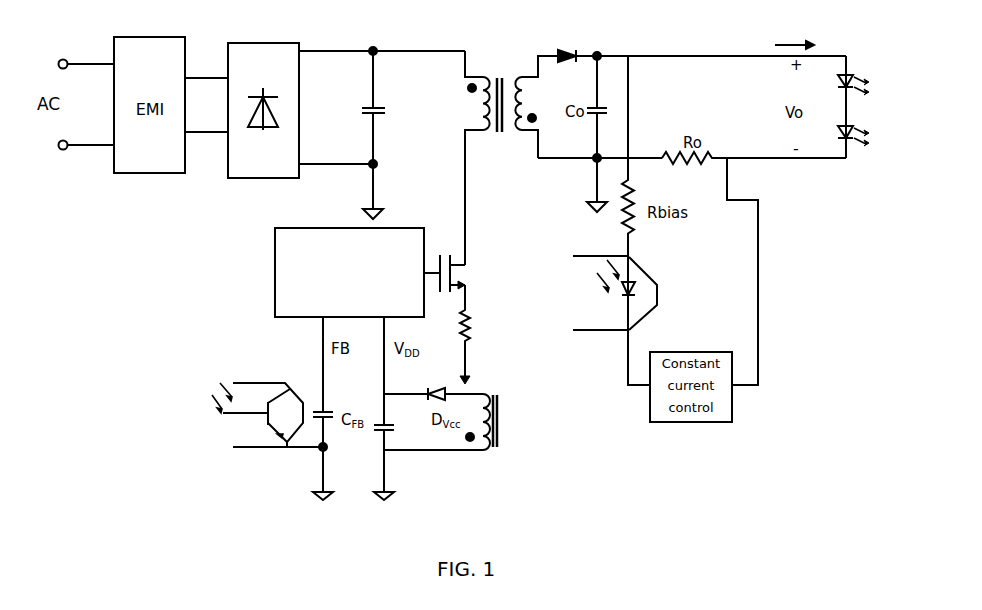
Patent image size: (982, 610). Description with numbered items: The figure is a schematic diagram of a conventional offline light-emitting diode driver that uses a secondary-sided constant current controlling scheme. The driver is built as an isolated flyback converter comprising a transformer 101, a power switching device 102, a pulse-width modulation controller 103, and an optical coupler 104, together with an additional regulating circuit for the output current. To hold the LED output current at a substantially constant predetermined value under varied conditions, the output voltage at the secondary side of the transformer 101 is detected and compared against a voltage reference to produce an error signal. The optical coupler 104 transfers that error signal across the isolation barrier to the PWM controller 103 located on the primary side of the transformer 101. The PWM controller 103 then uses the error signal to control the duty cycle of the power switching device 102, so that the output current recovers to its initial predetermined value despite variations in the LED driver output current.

The transformer 101 is at (506, 158).
The power switching device 102 is at (460, 319).
The PWM controller 103 is at (334, 312).
The optical coupler 104 is at (434, 351).